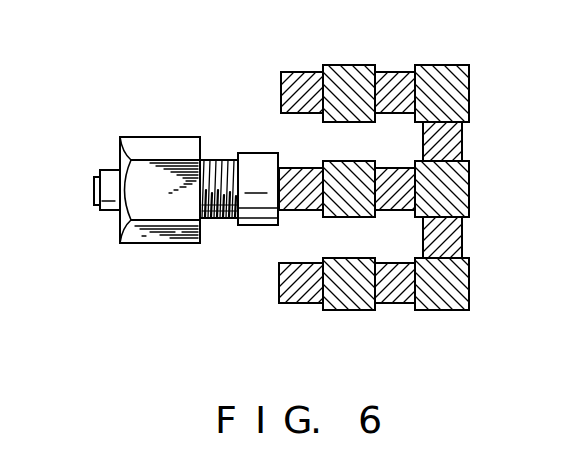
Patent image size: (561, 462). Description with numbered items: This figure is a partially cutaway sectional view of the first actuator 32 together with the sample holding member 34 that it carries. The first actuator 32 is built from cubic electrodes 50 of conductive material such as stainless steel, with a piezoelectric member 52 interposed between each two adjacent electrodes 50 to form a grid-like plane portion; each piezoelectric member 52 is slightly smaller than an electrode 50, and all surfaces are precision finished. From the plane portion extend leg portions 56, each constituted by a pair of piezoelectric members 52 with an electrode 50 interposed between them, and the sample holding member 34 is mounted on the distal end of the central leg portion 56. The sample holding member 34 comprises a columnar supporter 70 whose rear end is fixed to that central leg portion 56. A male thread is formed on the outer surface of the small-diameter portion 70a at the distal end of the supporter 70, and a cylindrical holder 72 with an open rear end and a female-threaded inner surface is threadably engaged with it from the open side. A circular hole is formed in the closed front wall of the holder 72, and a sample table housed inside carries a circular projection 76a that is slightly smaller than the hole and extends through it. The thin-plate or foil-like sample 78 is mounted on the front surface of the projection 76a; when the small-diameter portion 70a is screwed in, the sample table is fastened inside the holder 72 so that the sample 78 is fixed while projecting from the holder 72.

The first actuator 32 is at (397, 161).
The sample holding member 34 is at (203, 132).
The electrodes 50 is at (400, 187).
The piezoelectric member 52 is at (392, 178).
The leg portion 56 is at (327, 177).
The columnar supporter 70 is at (257, 163).
The small-diameter portion 70a is at (217, 220).
The cylindrical holder 72 is at (164, 145).
The circular projection 76a is at (107, 207).
The sample 78 is at (93, 190).